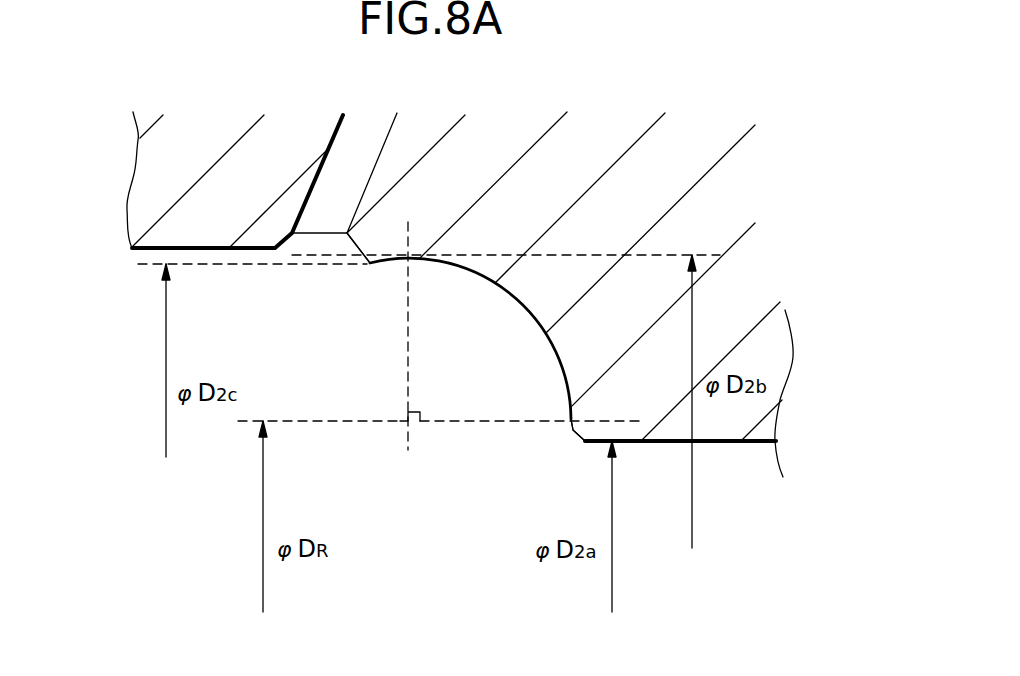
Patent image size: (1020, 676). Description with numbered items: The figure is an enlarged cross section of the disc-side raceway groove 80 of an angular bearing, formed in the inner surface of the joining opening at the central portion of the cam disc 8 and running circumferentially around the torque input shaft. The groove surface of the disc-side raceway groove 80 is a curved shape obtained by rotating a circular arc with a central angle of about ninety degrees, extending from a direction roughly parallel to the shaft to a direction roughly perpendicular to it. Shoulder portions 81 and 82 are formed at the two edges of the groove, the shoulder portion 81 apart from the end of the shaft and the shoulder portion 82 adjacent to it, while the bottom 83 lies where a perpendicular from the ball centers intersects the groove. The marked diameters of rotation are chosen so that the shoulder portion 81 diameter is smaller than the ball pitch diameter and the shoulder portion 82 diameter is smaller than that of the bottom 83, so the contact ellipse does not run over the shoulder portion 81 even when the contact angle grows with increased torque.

The cam disc 8 is at (141, 250).
The disc-side raceway groove 80 is at (527, 308).
The shoulder portion 81 is at (573, 430).
The shoulder portion 82 is at (368, 263).
The bottom 83 is at (407, 267).